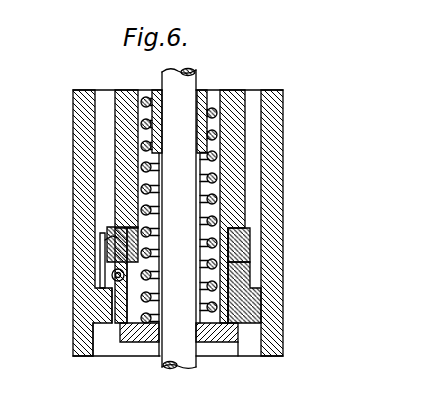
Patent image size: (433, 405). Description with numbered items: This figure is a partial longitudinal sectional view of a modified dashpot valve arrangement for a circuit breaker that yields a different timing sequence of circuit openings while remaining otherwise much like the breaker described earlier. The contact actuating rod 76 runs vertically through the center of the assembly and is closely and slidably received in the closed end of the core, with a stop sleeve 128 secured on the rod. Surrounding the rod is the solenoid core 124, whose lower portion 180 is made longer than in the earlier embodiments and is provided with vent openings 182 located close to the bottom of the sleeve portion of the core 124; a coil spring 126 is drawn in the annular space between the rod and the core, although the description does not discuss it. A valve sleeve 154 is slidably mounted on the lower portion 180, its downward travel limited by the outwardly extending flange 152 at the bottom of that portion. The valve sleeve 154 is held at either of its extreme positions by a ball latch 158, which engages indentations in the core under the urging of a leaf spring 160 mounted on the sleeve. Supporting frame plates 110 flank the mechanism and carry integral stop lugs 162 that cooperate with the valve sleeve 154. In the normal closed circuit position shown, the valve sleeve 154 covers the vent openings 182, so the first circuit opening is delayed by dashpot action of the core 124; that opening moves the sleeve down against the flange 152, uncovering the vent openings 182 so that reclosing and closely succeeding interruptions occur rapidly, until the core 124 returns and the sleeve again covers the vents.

The contact actuating rod 76 is at (186, 90).
The supporting frame plates 110 is at (73, 165).
The solenoid core 124 is at (247, 138).
The spring 126 is at (227, 197).
The stop sleeve 128 is at (217, 122).
The flange 152 is at (233, 342).
The valve sleeve 154 is at (243, 272).
The ball latch 158 is at (112, 275).
The leaf spring 160 is at (102, 258).
The stop lugs 162 is at (103, 323).
The lower portion of core 180 is at (228, 309).
The vent openings 182 is at (108, 232).